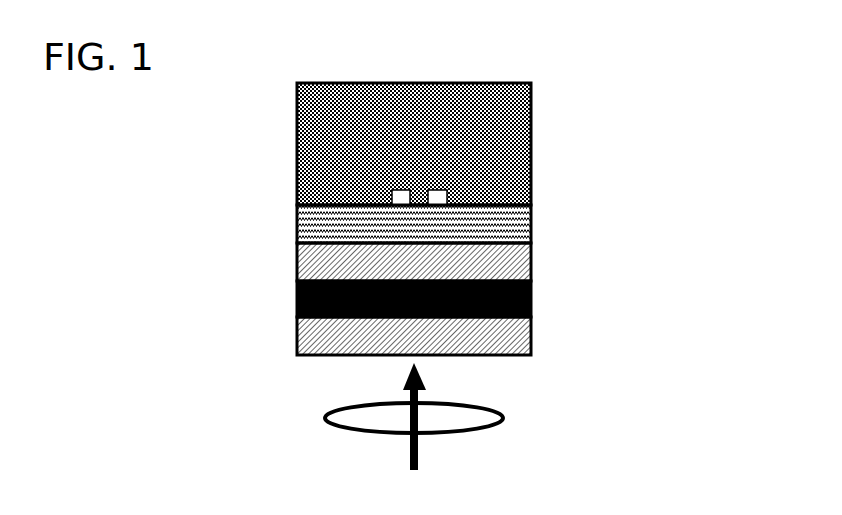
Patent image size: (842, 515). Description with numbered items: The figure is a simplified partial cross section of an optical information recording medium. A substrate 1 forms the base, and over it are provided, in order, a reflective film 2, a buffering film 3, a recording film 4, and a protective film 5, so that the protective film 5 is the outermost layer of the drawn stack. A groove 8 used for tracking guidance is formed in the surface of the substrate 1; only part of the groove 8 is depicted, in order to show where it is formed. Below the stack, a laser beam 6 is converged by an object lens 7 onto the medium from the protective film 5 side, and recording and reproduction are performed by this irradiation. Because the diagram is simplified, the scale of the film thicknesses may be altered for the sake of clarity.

The substrate 1 is at (531, 143).
The groove 8 is at (394, 194).
The reflective film 2 is at (531, 225).
The buffering film 3 is at (531, 260).
The recording film 4 is at (531, 300).
The protective film 5 is at (531, 332).
The object lens 7 is at (503, 418).
The laser beam 6 is at (418, 450).